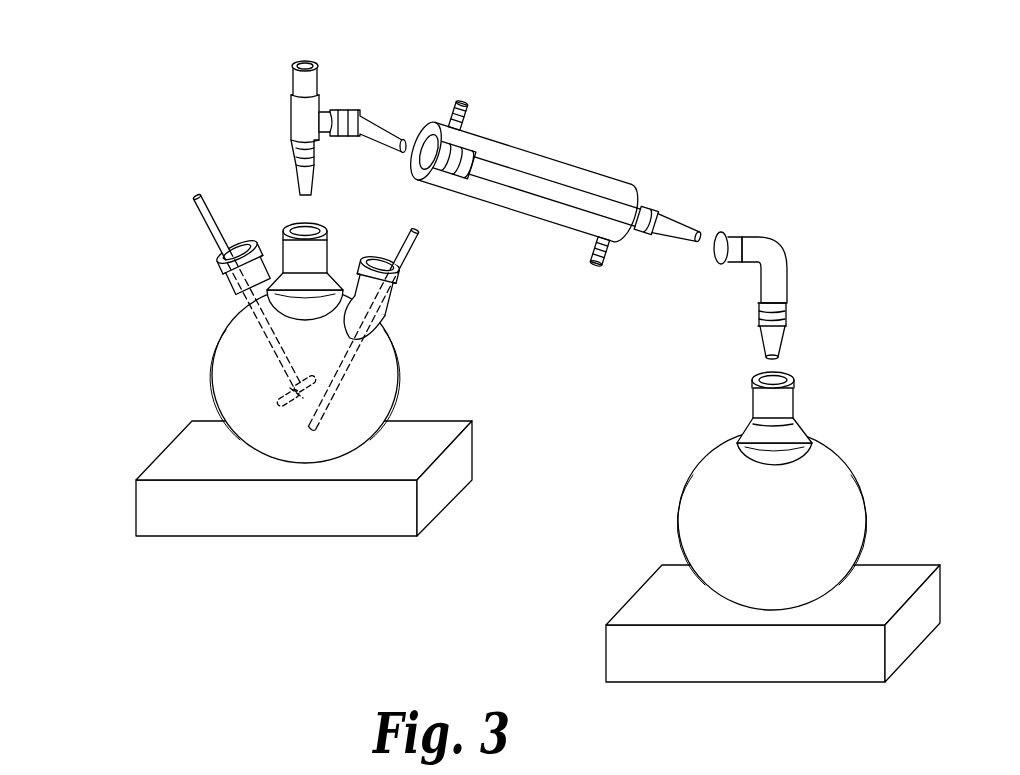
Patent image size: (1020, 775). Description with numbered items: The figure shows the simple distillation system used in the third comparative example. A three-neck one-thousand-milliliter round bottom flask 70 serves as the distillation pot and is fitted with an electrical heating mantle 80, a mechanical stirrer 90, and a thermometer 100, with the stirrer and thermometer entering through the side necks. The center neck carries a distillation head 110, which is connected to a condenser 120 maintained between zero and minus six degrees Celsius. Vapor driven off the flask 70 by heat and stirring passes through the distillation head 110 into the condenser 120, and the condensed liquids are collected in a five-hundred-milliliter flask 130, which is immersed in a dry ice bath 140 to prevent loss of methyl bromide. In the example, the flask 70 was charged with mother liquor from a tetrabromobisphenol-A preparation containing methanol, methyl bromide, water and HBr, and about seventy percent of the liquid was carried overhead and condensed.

The round bottom flask 70 is at (201, 373).
The electrical heating mantle 80 is at (126, 508).
The mechanical stirrer 90 is at (207, 225).
The thermometer 100 is at (418, 252).
The distillation head 110 is at (277, 116).
The condenser 120 is at (534, 139).
The flask 130 is at (682, 472).
The dry ice bath 140 is at (594, 650).